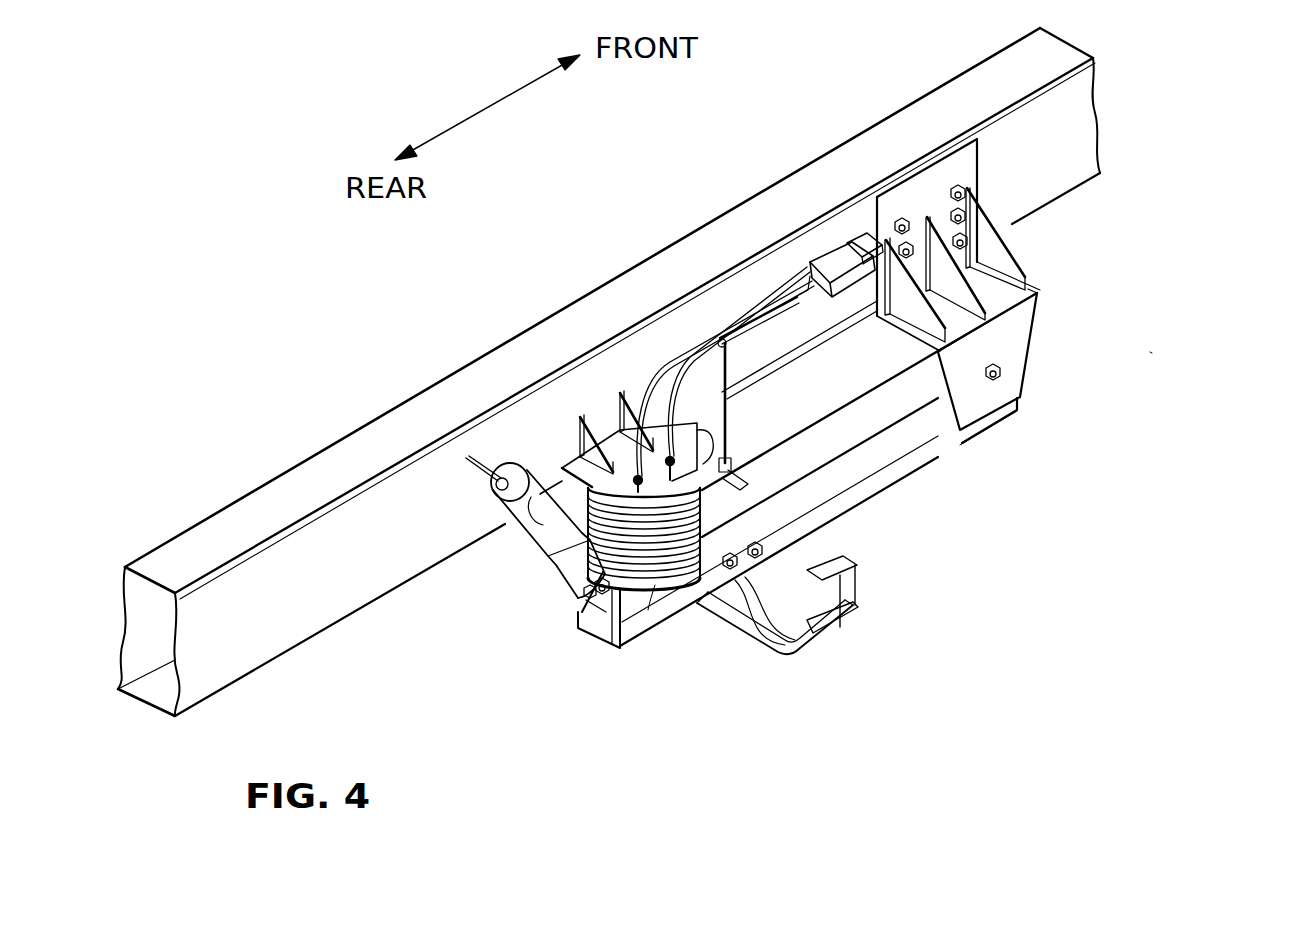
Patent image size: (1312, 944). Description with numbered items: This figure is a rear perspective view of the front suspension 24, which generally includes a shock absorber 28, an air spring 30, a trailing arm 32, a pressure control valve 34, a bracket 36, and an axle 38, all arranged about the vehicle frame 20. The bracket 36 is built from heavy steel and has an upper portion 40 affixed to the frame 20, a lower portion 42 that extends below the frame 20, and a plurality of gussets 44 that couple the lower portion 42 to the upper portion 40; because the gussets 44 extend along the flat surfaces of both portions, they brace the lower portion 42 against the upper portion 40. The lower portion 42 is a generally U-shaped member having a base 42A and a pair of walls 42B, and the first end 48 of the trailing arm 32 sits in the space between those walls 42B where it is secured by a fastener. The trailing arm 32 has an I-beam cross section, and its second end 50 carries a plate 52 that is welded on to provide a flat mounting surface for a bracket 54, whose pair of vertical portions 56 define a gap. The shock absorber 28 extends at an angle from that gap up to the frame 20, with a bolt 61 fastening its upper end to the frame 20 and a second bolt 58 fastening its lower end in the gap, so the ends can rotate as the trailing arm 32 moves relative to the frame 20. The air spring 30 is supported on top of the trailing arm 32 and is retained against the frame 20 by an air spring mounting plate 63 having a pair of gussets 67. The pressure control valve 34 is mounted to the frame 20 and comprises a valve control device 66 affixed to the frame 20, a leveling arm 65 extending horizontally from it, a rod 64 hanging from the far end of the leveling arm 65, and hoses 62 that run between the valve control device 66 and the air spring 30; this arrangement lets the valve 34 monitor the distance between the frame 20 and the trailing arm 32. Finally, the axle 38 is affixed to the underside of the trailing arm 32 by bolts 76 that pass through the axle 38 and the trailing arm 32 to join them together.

The frame 20 is at (652, 268).
The front suspension 24 is at (1152, 353).
The shock absorber 28 is at (535, 530).
The air spring 30 is at (664, 585).
The trailing arm 32 is at (900, 453).
The pressure control valve 34 is at (826, 262).
The bracket 36 is at (940, 187).
The axle 38 is at (740, 617).
The upper portion 40 is at (950, 173).
The lower portion 42 is at (1032, 353).
The base 42A is at (1040, 302).
The walls 42B is at (1025, 347).
The gussets 44 is at (1003, 295).
The first end 48 is at (1013, 432).
The second end 50 is at (628, 645).
The plate 52 is at (600, 616).
The bracket 54 is at (590, 600).
The vertical portions 56 is at (598, 594).
The second bolt 58 is at (655, 600).
The bolt 61 is at (488, 478).
The hoses 62 is at (757, 303).
The air spring mounting plate 63 is at (735, 490).
The rod 64 is at (727, 415).
The leveling arm 65 is at (773, 318).
The valve control device 66 is at (857, 243).
The gussets 67 is at (622, 428).
The bolts 76 is at (758, 558).